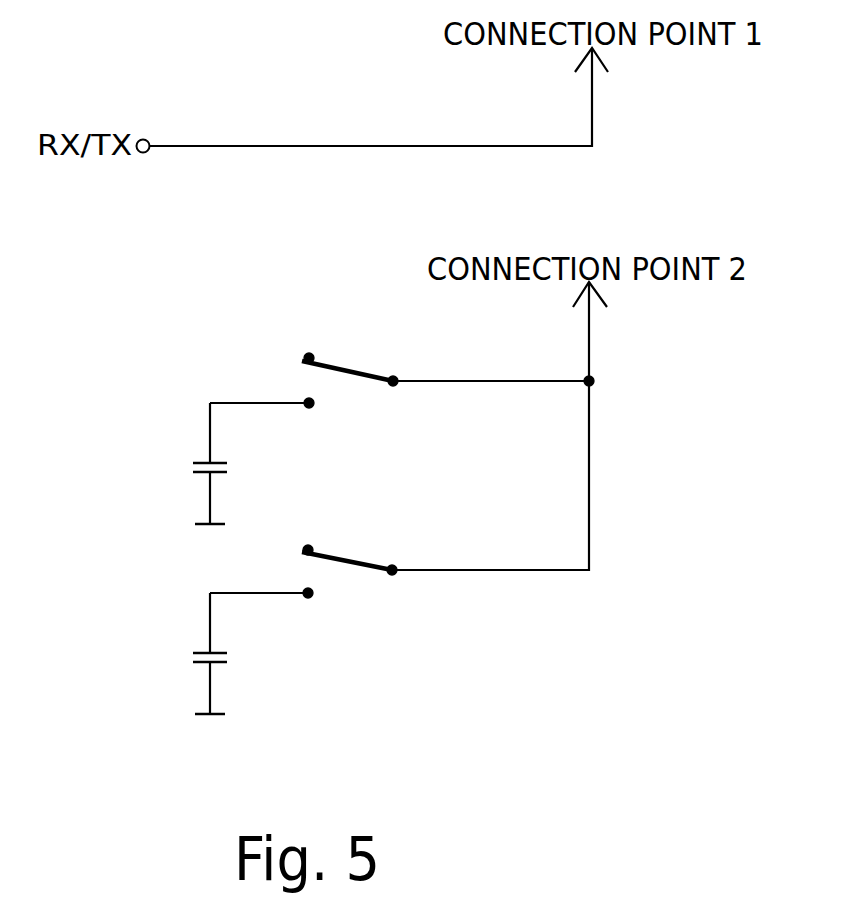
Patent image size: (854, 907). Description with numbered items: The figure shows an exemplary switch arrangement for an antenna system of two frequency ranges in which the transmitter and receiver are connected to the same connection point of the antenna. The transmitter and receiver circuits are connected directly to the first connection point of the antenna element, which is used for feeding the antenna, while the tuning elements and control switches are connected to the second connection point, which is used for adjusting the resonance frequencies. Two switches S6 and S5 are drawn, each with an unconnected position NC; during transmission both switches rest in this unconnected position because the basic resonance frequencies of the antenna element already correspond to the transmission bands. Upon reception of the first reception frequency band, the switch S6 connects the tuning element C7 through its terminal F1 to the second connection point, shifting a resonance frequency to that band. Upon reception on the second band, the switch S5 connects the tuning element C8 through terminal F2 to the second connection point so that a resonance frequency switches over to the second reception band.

The switch S6 is at (357, 372).
The switch S5 is at (357, 560).
The tuning element C7 is at (192, 468).
The capacitor C8 is at (192, 658).
The terminal F1 is at (269, 425).
The terminal F2 is at (269, 614).